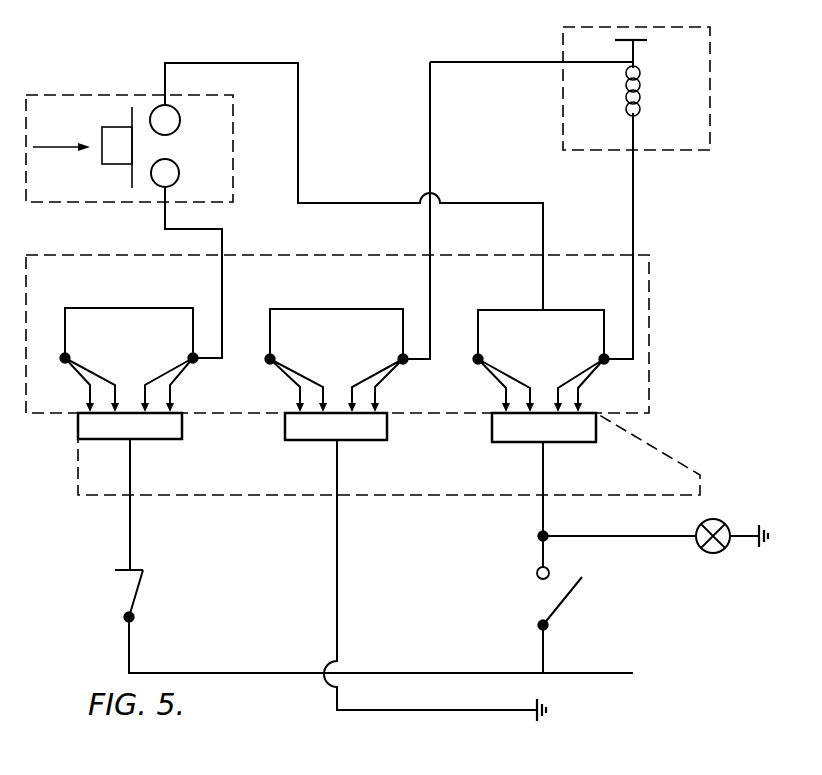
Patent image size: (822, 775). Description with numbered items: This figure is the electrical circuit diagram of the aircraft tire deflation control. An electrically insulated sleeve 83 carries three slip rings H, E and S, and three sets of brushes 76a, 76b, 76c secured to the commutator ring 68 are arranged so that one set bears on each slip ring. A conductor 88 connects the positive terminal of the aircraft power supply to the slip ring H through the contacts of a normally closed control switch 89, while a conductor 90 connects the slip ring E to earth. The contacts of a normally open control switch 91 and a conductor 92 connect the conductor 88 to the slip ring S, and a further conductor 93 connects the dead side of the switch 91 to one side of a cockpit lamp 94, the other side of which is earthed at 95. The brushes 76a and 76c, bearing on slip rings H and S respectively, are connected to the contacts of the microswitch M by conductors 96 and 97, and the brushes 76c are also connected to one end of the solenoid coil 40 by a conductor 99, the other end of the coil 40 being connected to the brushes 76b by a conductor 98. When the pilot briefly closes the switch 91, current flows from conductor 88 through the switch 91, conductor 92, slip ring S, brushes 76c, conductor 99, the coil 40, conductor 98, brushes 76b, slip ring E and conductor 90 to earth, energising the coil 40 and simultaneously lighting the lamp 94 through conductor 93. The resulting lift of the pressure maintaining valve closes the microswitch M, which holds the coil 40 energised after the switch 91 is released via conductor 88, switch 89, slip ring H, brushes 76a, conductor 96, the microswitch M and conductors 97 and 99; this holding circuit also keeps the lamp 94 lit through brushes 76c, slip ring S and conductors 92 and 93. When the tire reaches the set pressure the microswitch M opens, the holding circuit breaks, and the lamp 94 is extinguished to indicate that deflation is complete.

The solenoid coil 40 is at (640, 88).
The commutator ring 68 is at (336, 296).
The set of brushes 76a is at (190, 357).
The set of brushes 76b is at (401, 357).
The set of brushes 76c is at (602, 357).
The electrically insulated sleeve 83 is at (422, 476).
The conductor 88 is at (560, 673).
The control switch 89 is at (143, 586).
The conductor 90 is at (338, 578).
The control switch 91 is at (560, 612).
The conductor 92 is at (545, 510).
The conductor 93 is at (612, 535).
The lamp 94 is at (746, 505).
The earth connection 95 is at (768, 546).
The conductor 96 is at (224, 235).
The conductor 97 is at (322, 203).
The conductor 98 is at (430, 161).
The conductor 99 is at (635, 222).
The microswitch M is at (63, 191).
The slip ring H is at (116, 424).
The slip ring E is at (326, 426).
The slip ring S is at (530, 428).